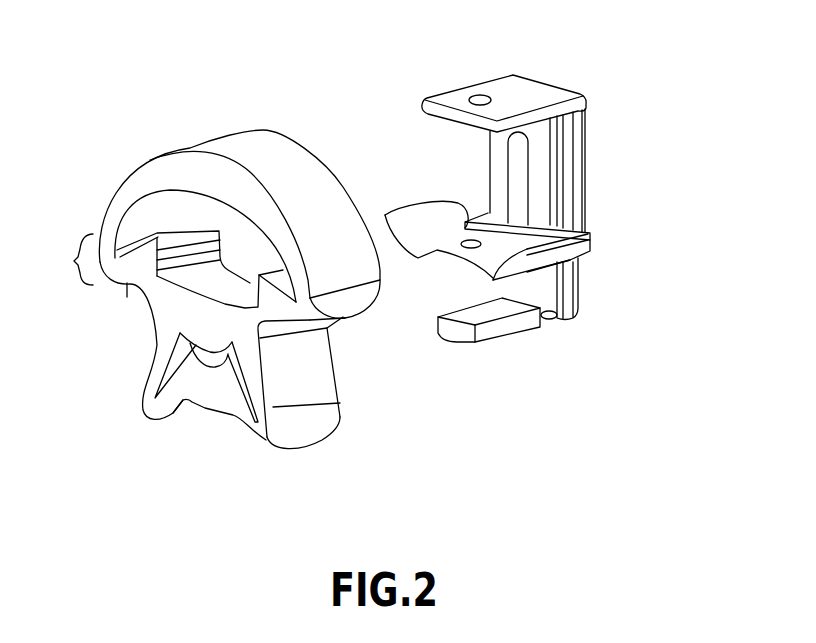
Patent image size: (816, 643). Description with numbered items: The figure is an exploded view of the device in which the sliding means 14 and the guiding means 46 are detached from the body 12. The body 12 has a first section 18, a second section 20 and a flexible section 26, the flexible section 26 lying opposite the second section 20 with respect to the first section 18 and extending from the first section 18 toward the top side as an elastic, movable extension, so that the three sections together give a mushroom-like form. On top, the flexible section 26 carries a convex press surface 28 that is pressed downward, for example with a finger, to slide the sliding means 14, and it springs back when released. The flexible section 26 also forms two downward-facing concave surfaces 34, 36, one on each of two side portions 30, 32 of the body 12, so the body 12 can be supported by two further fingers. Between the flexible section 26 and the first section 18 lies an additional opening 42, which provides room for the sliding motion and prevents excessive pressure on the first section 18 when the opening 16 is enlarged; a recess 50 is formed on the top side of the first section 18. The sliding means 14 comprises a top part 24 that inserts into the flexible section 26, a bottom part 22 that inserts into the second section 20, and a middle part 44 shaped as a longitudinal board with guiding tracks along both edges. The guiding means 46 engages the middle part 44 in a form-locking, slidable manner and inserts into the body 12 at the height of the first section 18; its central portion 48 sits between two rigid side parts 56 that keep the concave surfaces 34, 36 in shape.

The body 12 is at (176, 98).
The sliding means 14 is at (574, 78).
The opening 16 is at (175, 353).
The first section 18 is at (200, 313).
The second section 20 is at (204, 397).
The bottom part 22 is at (490, 337).
The top part 24 is at (503, 93).
The flexible section 26 is at (246, 142).
The convex press surface 28 is at (283, 148).
The side portion 30 is at (69, 259).
The side portion 32 is at (377, 318).
The concave surface 34 is at (123, 284).
The concave surface 36 is at (283, 345).
The additional opening 42 is at (217, 218).
The middle part 44 is at (578, 162).
The guiding means 46 is at (605, 249).
The central portion 48 is at (462, 263).
The recess 50 is at (199, 280).
The rigid side part 56 is at (530, 270).